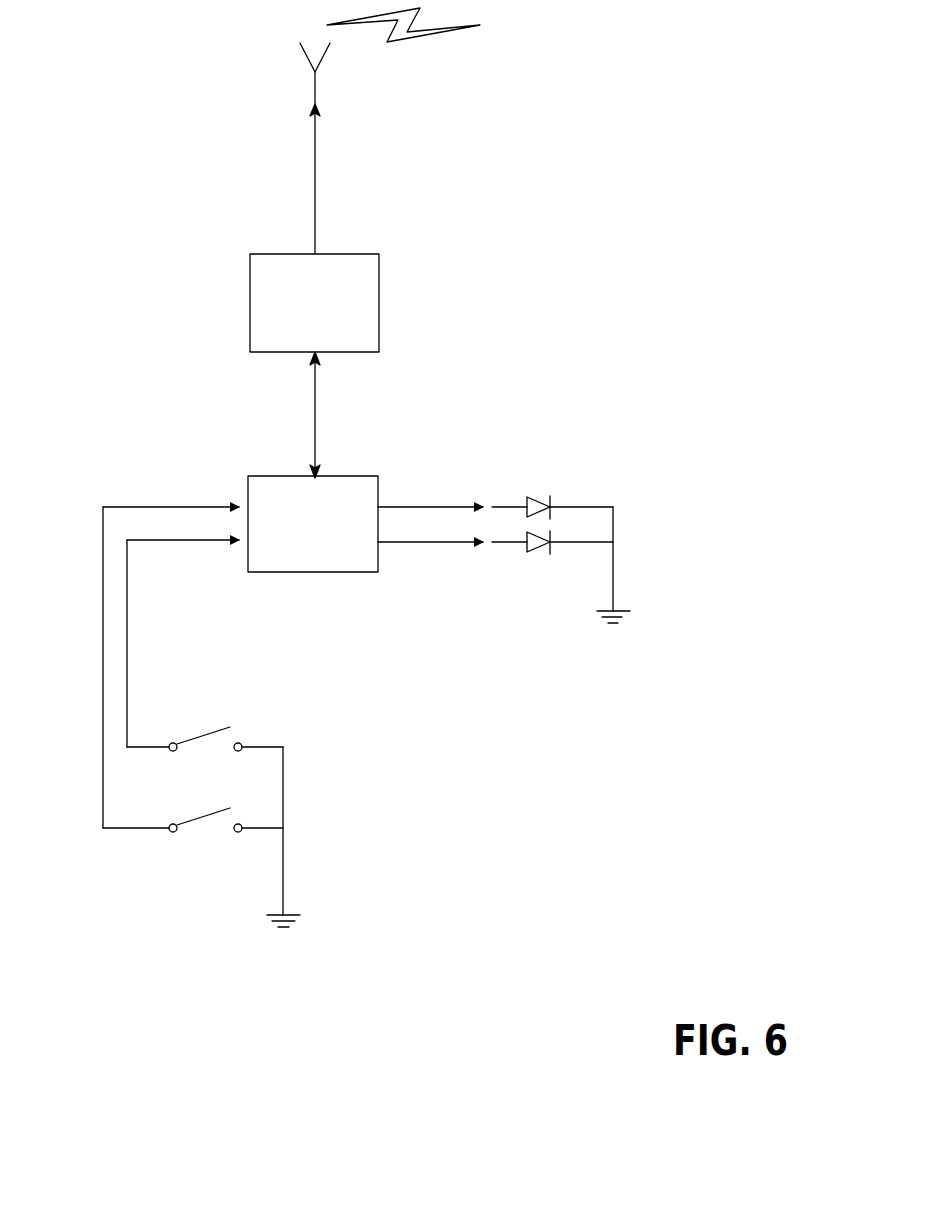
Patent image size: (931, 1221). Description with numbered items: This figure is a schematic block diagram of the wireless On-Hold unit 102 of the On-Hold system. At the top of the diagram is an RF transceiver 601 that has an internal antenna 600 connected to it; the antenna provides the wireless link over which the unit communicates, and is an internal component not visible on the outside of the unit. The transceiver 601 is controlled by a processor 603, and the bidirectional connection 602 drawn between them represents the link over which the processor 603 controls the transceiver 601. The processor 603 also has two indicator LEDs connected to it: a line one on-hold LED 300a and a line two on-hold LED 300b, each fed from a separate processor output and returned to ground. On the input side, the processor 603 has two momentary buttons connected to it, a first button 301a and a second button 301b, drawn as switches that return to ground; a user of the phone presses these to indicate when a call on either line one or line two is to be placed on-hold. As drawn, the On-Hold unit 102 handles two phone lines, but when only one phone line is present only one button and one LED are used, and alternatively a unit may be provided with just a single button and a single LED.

The On-Hold unit 102 is at (469, 120).
The internal antenna 600 is at (315, 90).
The RF transceiver 601 is at (382, 251).
The bus connection 602 is at (297, 417).
The processor 603 is at (382, 475).
The line 1 on-hold LED 300a is at (543, 488).
The line 2 on-hold LED 300b is at (537, 568).
The button 301a is at (207, 715).
The button 301b is at (197, 848).